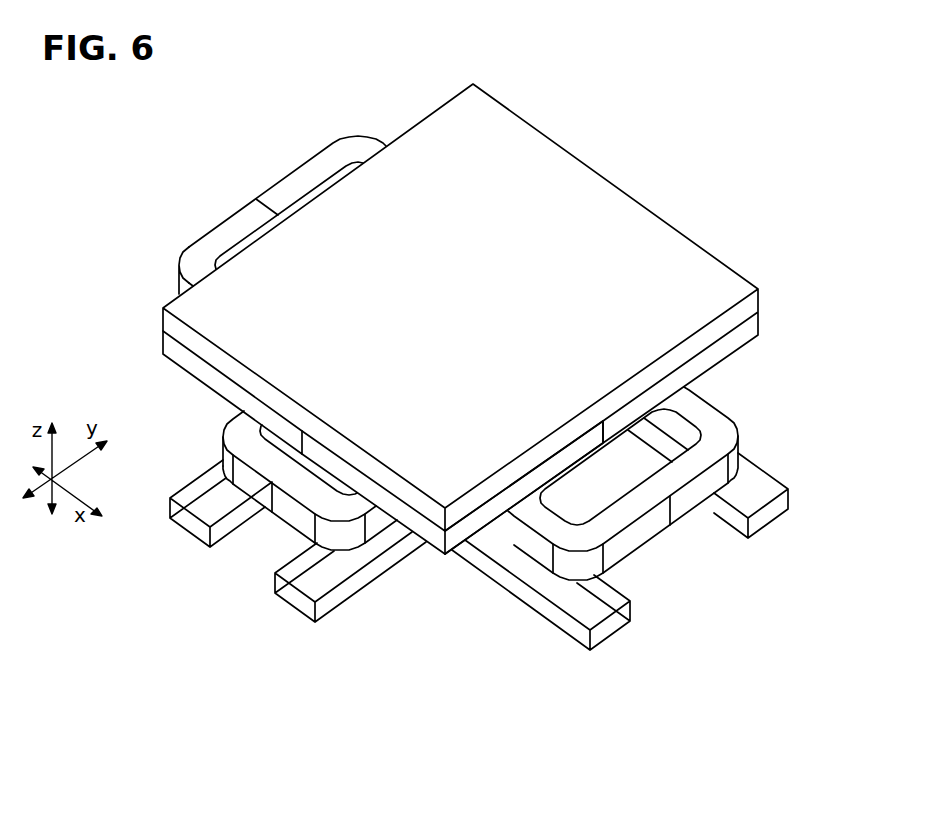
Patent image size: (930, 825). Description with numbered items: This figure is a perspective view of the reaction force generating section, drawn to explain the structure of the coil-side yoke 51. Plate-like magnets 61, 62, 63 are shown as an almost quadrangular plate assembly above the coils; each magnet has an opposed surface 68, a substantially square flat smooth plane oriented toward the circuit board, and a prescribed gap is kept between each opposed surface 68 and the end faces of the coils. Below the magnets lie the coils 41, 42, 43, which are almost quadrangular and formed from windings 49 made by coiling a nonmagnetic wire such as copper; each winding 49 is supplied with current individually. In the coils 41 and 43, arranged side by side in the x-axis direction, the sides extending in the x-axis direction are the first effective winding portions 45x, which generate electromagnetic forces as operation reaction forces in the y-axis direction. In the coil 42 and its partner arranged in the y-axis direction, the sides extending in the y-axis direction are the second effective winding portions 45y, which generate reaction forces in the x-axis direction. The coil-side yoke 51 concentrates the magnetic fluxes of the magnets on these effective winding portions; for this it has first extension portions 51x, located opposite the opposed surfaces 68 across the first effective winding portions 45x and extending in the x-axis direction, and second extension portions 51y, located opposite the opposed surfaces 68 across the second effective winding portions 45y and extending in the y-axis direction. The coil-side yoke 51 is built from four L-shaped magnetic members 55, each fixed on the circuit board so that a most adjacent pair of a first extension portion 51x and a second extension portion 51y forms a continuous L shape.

The coil 41 is at (740, 431).
The coil 42 is at (226, 427).
The coil 43 is at (180, 262).
The first effective winding portion 45x is at (708, 412).
The second effective winding portion 45y is at (380, 518).
The winding 49 is at (237, 212).
The coil-side yoke 51 is at (607, 627).
The first extension portion 51x is at (765, 466).
The second extension portion 51y is at (338, 600).
The magnetic member 55 is at (202, 530).
The magnet 61 is at (758, 326).
The magnet 62 is at (475, 523).
The magnet 63 is at (176, 356).
The opposed surface 68 is at (436, 553).